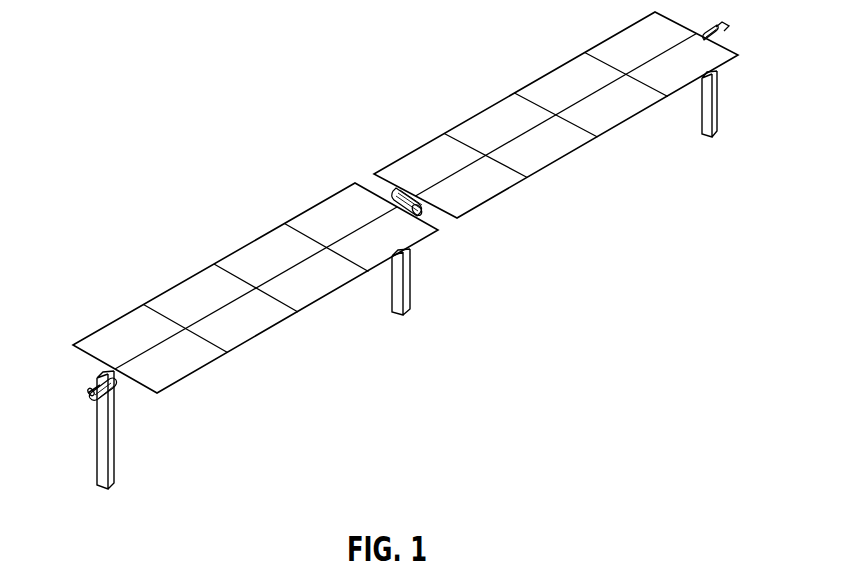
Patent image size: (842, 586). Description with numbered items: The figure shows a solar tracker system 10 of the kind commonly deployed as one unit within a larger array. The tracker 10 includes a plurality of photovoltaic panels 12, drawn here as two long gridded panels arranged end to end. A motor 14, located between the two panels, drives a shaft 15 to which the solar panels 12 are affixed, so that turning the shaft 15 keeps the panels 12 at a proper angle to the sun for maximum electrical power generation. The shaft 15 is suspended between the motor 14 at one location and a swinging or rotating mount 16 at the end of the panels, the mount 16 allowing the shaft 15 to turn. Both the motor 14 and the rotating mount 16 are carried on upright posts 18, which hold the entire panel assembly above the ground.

The solar tracker system 10 is at (203, 183).
The photovoltaic panels 12 is at (217, 262).
The motor 14 is at (397, 189).
The shaft 15 is at (88, 393).
The rotating mount 16 is at (94, 379).
The posts 18 is at (117, 439).